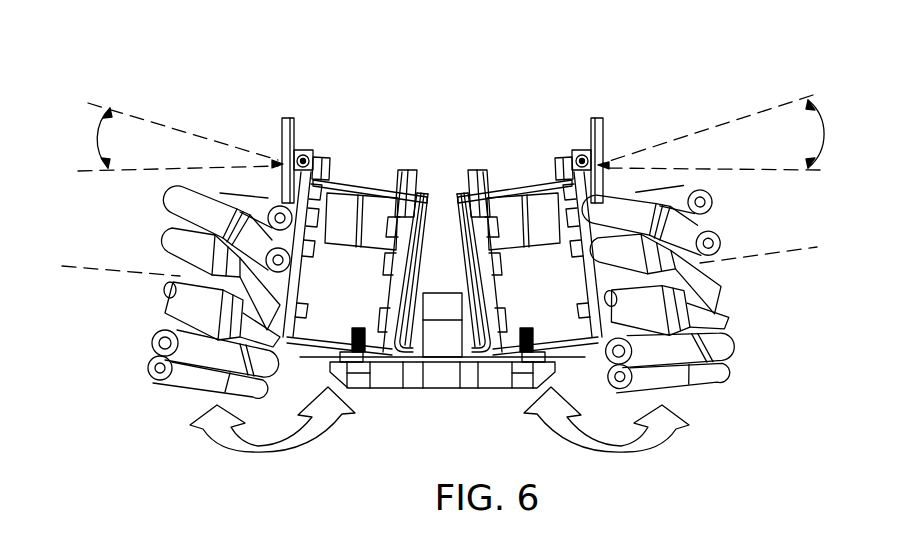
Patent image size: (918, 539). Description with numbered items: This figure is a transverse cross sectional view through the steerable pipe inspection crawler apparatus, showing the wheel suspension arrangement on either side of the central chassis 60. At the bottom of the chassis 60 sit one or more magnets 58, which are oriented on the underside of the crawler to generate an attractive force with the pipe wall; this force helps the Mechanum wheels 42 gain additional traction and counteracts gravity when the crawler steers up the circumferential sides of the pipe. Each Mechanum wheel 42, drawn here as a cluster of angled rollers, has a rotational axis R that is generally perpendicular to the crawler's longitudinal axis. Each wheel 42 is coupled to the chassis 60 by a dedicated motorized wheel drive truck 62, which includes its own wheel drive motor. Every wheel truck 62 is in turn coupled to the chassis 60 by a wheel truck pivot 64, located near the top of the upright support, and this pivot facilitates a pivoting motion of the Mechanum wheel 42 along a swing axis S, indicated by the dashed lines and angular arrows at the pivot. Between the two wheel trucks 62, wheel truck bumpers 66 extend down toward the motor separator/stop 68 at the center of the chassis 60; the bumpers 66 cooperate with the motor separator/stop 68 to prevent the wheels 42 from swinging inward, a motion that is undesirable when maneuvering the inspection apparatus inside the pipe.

The Mechanum wheel 42 is at (173, 372).
The magnet 58 is at (434, 390).
The chassis 60 is at (286, 118).
The motorized wheel drive truck 62 is at (347, 220).
The wheel truck pivot 64 is at (293, 162).
The wheel truck bumper 66 is at (430, 200).
The motor separator/stop 68 is at (441, 305).
The swing axis S is at (461, 133).
The rotational axis R is at (437, 256).